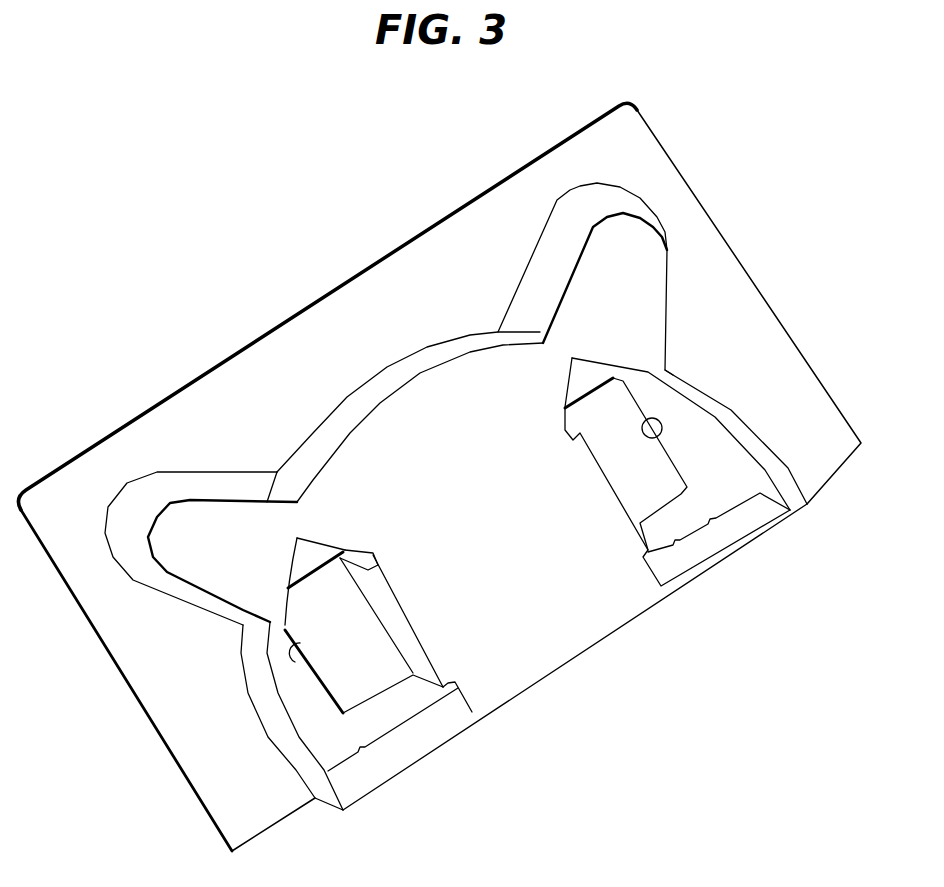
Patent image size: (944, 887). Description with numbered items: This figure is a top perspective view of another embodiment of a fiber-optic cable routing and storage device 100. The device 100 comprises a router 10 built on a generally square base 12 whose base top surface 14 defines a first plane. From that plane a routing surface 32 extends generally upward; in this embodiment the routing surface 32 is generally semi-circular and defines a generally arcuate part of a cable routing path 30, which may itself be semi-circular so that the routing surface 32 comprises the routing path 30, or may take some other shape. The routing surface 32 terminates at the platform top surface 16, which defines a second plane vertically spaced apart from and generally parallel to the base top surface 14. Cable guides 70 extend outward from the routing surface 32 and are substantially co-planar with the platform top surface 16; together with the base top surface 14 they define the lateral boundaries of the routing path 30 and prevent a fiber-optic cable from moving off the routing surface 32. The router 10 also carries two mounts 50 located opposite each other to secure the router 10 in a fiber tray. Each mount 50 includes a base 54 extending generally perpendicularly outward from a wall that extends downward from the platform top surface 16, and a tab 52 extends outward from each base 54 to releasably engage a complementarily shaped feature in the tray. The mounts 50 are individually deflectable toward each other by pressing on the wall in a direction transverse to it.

The cable routing and storage device 100 is at (242, 274).
The router 10 is at (749, 273).
The base 12 is at (639, 120).
The base top surface 14 is at (372, 338).
The platform top surface 16 is at (518, 565).
The cable routing path 30 is at (479, 346).
The routing surface 32 is at (358, 404).
The mount 50 is at (686, 471).
The tab 52 is at (665, 430).
The base 54 is at (657, 497).
The cable guide 70 is at (636, 297).